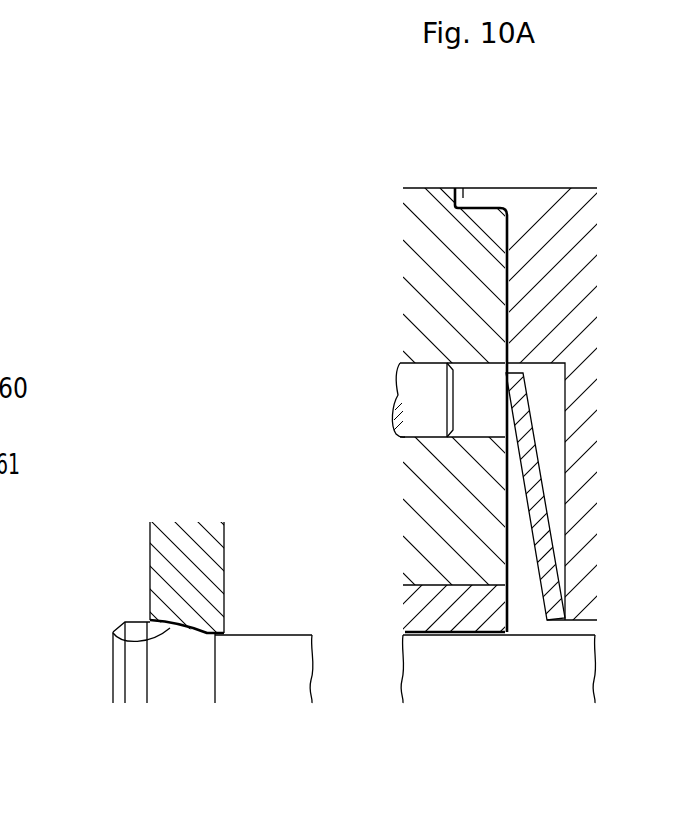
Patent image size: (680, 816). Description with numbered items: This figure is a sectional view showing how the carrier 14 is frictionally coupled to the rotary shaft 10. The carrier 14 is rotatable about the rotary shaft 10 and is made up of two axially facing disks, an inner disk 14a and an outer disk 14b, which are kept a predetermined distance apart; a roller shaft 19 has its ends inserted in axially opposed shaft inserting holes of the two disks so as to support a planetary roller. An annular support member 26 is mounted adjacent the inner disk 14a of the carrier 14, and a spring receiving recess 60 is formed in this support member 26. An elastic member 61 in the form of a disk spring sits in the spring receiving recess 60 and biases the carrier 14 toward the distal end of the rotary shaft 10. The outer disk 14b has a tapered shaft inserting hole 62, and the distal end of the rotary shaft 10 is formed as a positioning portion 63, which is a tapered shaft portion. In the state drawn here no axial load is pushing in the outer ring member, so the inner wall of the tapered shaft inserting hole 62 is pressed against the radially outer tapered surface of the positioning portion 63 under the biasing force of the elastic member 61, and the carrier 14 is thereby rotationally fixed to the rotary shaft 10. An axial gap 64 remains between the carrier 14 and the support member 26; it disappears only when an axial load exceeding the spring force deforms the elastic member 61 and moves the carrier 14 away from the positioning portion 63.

The rotary shaft 10 is at (290, 650).
The carrier 14 is at (403, 186).
The inner disk 14a is at (437, 208).
The outer disk 14b is at (190, 530).
The roller shaft 19 is at (410, 383).
The annular support member 26 is at (553, 195).
The spring receiving recess 60 is at (560, 398).
The elastic member 61 is at (537, 471).
The tapered shaft inserting hole 62 is at (118, 634).
The positioning portion 63 is at (160, 677).
The axial gap 64 is at (507, 285).